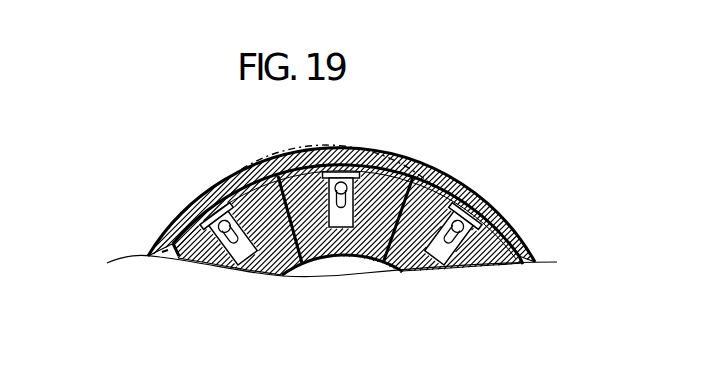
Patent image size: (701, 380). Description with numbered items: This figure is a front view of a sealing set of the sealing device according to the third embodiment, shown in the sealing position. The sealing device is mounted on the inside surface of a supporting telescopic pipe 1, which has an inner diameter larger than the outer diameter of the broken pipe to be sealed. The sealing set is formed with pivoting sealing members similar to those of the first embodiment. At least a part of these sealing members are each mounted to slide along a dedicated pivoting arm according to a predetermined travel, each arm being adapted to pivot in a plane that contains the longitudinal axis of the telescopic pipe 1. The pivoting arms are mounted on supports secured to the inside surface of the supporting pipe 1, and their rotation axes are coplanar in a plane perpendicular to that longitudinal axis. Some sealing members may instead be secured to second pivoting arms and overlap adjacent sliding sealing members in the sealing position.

The supporting telescopic pipe 1 is at (493, 194).